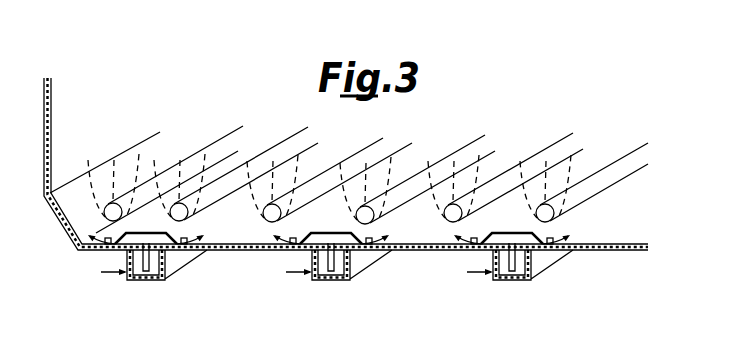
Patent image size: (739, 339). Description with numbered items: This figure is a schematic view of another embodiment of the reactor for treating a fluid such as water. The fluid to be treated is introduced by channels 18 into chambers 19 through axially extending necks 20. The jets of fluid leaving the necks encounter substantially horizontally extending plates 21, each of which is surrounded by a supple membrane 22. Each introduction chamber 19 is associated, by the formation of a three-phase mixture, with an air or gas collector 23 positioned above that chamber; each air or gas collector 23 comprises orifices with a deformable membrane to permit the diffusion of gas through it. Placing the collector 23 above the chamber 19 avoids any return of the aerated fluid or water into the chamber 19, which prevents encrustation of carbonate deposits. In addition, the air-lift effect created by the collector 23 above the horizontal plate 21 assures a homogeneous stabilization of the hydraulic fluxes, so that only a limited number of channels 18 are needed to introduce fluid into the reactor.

The channel 18 is at (108, 272).
The chamber 19 is at (182, 263).
The axially extending neck 20 is at (153, 265).
The horizontally extending plate 21 is at (146, 236).
The supple membrane 22 is at (183, 231).
The air or gas collector 23 is at (292, 148).